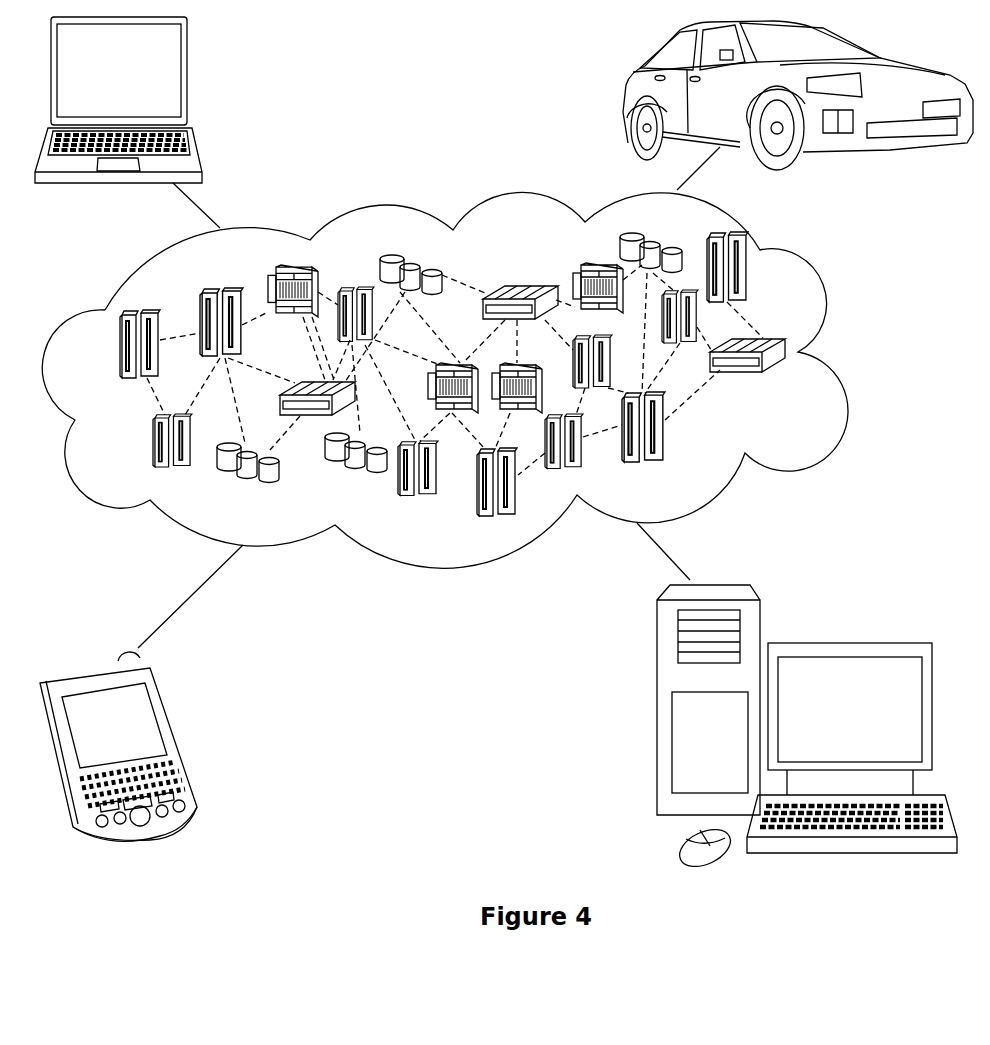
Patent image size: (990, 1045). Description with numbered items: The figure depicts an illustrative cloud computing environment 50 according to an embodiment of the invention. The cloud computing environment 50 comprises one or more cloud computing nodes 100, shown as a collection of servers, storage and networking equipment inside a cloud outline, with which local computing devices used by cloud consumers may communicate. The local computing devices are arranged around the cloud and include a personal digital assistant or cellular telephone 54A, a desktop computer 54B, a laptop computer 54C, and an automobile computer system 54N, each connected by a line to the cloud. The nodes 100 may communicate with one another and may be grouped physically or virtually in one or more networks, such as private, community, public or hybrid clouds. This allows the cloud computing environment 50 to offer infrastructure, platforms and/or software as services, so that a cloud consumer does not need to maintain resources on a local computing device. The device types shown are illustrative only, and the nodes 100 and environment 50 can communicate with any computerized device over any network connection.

The cloud computing environment 50 is at (846, 353).
The cloud computing nodes 100 is at (791, 385).
The personal digital assistant (PDA) or cellular telephone 54A is at (177, 735).
The desktop computer 54B is at (847, 642).
The laptop computer 54C is at (187, 80).
The automobile computer system 54N is at (628, 96).